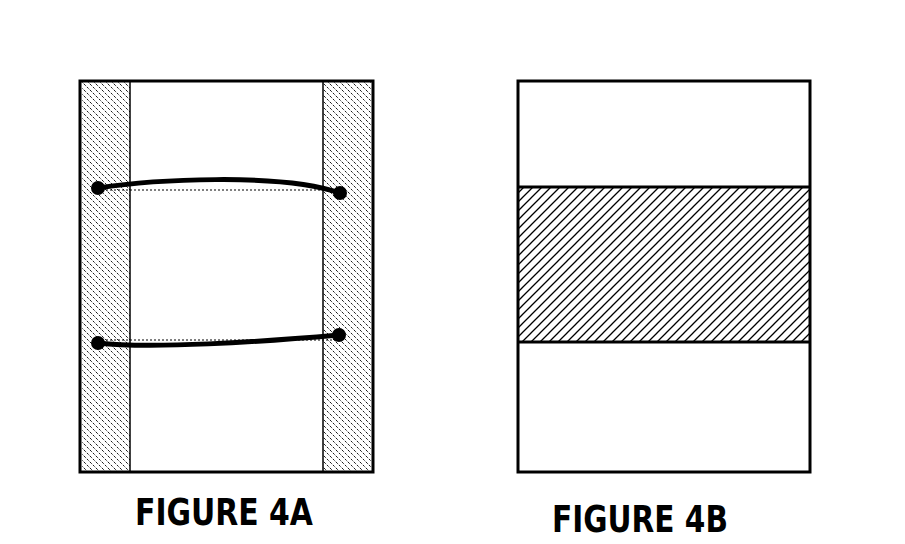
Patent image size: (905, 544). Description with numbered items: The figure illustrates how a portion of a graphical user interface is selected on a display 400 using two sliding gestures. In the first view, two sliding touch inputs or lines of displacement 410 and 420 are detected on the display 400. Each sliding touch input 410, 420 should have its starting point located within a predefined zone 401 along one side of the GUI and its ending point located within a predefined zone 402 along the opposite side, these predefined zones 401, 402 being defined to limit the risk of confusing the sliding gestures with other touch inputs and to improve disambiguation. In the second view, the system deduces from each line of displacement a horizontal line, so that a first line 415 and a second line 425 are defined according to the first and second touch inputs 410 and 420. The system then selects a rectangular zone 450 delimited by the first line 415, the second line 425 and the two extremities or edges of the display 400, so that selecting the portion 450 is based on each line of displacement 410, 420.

In FIG. 4A, the display 400 is at (373, 128).
In FIG. 4B, the display 400 is at (812, 140).
In FIG. 4A, the predefined zone 401 is at (105, 143).
In FIG. 4A, the predefined zone 402 is at (357, 268).
In FIG. 4A, the sliding touch input 410 is at (252, 180).
In FIG. 4A, the sliding touch input 420 is at (128, 340).
In FIG. 4B, the first line 415 is at (607, 187).
In FIG. 4B, the second line 425 is at (530, 338).
In FIG. 4B, the rectangular zone 450 is at (783, 254).